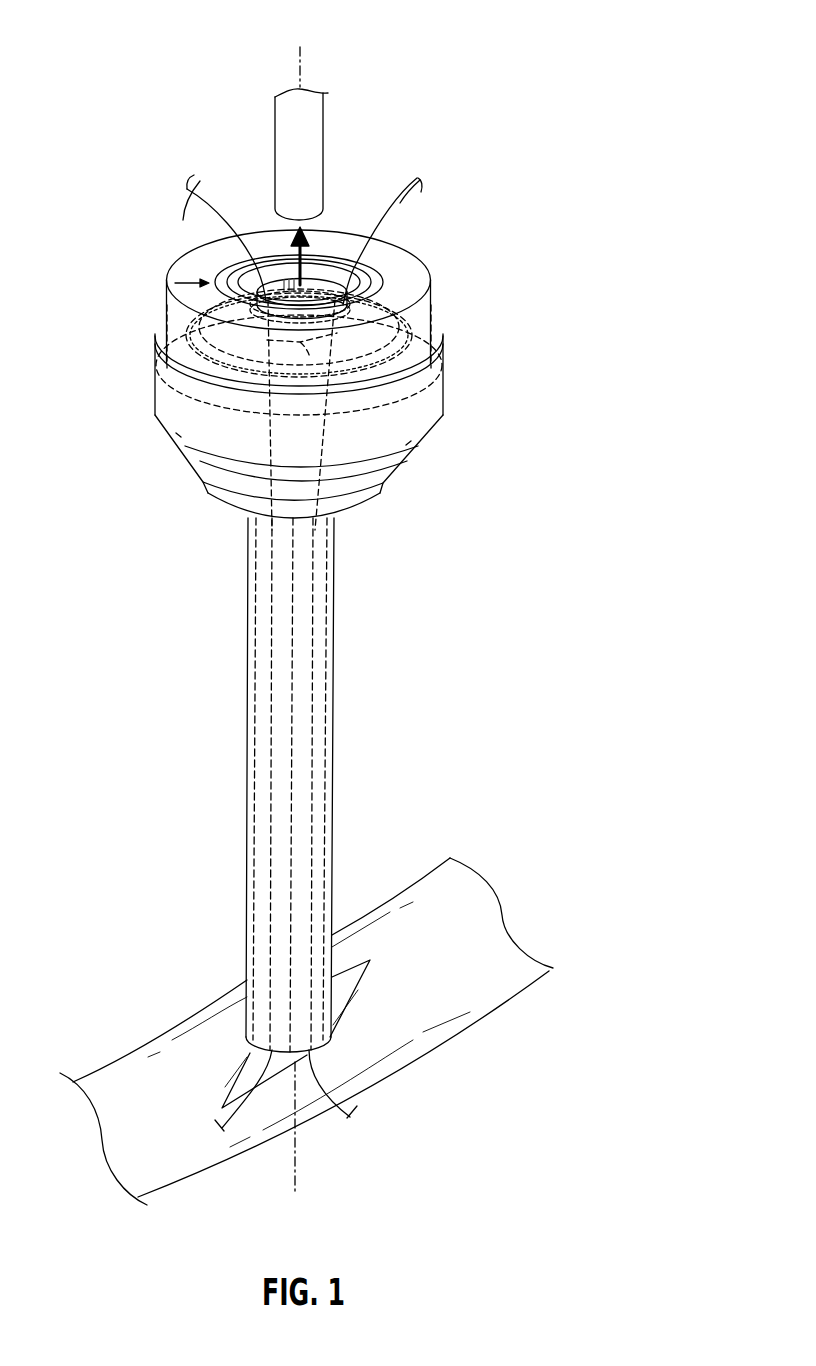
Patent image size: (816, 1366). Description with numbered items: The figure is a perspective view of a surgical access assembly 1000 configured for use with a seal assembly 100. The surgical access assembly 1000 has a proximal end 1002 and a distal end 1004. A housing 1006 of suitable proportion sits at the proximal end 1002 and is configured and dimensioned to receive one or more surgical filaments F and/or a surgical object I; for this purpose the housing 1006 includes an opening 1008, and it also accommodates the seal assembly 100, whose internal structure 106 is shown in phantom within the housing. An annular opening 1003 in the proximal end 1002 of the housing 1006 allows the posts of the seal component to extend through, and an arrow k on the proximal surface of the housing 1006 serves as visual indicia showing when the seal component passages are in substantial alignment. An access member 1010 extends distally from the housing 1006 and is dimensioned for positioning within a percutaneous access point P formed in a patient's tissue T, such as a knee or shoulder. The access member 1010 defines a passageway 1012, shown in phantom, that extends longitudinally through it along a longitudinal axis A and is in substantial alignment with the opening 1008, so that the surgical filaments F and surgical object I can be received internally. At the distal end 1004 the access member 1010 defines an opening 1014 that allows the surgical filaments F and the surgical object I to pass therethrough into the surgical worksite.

The surgical access assembly 1000 is at (164, 114).
The proximal end 1002 is at (421, 281).
The annular opening 1003 is at (384, 273).
The opening 1008 is at (318, 273).
The internal cavity 106 is at (200, 308).
The housing 1006 is at (435, 313).
The seal assembly 100 is at (423, 382).
The access member 1010 is at (334, 580).
The passageway 1012 is at (328, 700).
The opening 1014 is at (279, 1071).
The distal end 1004 is at (333, 1042).
The surgical object I is at (325, 125).
The surgical filament F is at (218, 191).
The arrow k is at (192, 276).
The longitudinal axis A is at (298, 624).
The tissue T is at (122, 1067).
The percutaneous access point P is at (345, 1007).